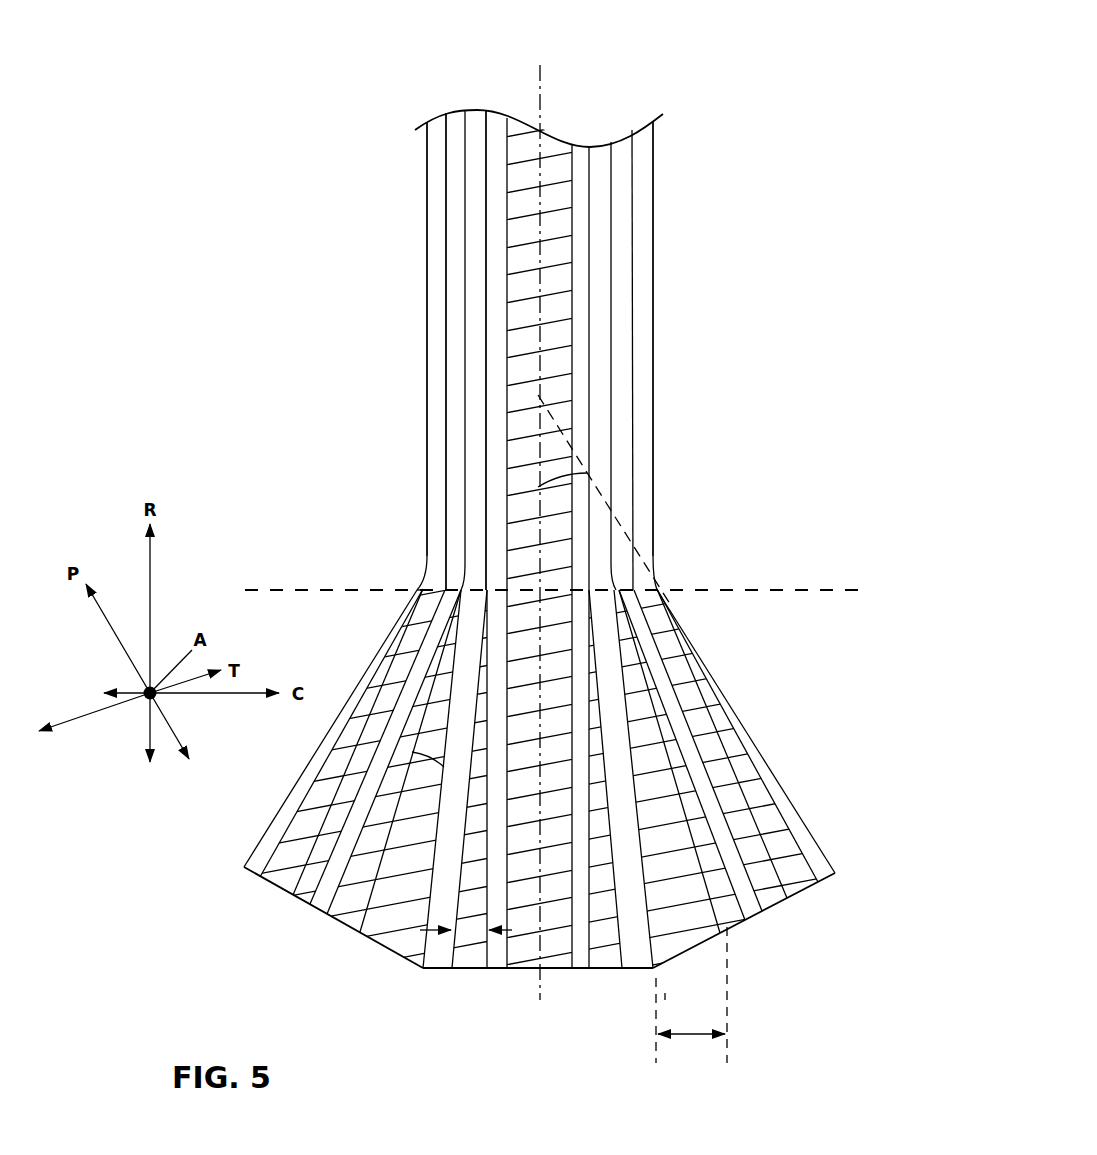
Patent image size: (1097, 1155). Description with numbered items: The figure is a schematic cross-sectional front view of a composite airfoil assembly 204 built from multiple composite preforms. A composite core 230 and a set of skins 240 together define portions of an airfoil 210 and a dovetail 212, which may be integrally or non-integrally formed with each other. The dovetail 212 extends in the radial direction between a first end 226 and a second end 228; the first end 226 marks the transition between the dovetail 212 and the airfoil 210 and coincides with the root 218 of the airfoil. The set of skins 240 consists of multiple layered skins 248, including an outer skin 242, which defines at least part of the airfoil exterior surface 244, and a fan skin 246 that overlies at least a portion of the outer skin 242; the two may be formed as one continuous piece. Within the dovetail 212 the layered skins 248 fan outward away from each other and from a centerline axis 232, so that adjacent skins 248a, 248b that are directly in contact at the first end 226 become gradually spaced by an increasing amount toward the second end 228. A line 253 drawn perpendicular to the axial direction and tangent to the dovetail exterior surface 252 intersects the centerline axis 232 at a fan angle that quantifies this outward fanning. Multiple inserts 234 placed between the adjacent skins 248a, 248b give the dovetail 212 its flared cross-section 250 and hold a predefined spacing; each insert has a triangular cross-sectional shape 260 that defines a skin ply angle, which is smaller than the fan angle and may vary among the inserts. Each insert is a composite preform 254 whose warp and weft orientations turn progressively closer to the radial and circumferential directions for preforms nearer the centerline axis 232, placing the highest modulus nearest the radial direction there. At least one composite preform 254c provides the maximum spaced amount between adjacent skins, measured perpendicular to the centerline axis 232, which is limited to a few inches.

The composite airfoil assembly 204 is at (232, 64).
The airfoil 210 is at (656, 191).
The dovetail 212 is at (539, 533).
The root 218 is at (425, 578).
The first end 226 is at (413, 594).
The second end 228 is at (420, 971).
The composite core 230 is at (558, 365).
The centerline axis 232 is at (541, 101).
The multiple inserts 234 is at (718, 920).
The set of skins 240 is at (652, 269).
The outer skin 242 is at (440, 157).
The airfoil exterior surface 244 is at (427, 240).
The fan skin 246 is at (703, 670).
The multiple layered skins 248 is at (484, 131).
The adjacent skin 248a is at (447, 947).
The adjacent skin 248b is at (498, 960).
The flared cross-section 250 is at (684, 725).
The dovetail exterior surface 252 is at (808, 825).
The line 253 is at (640, 515).
The composite preform 254 is at (303, 830).
The composite preform 254c is at (677, 940).
The triangular cross-sectional shape 260 is at (305, 826).